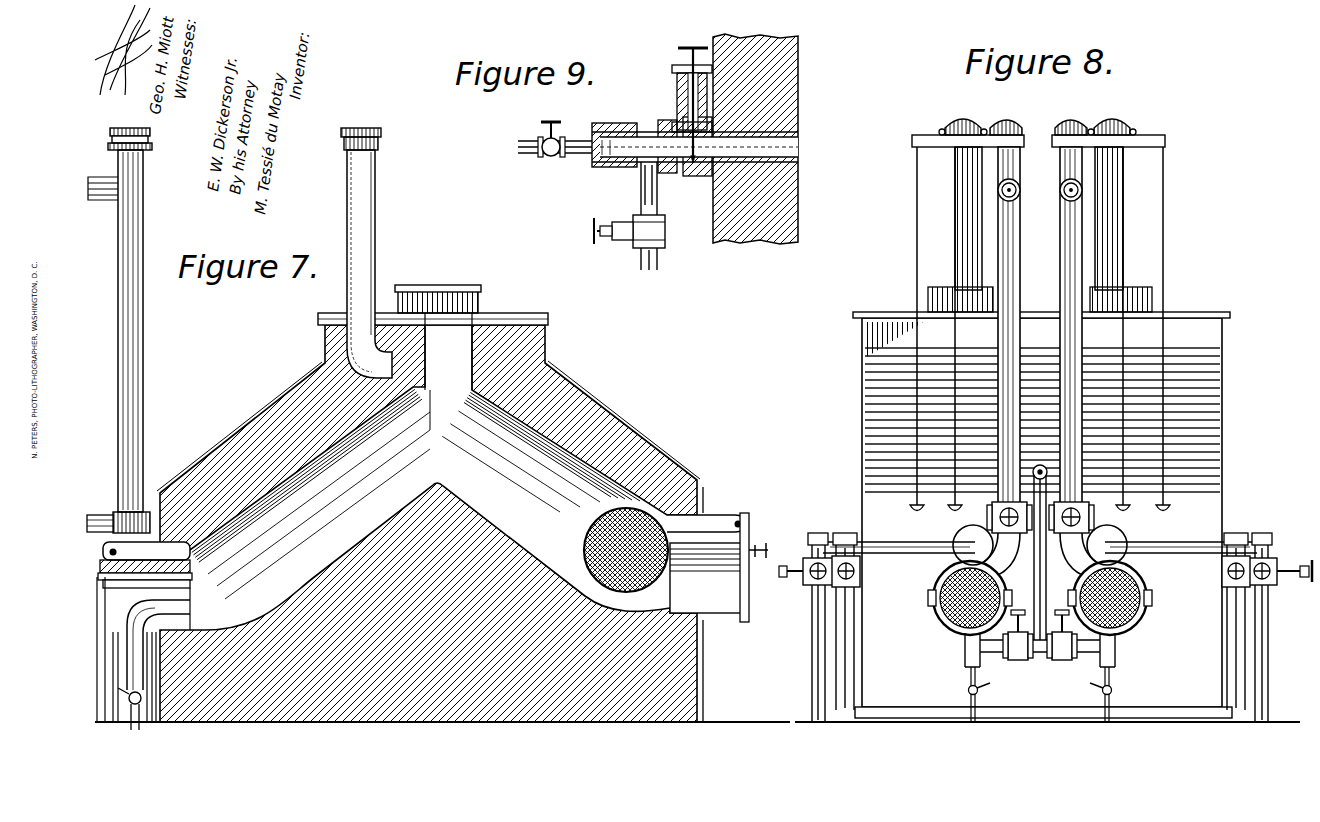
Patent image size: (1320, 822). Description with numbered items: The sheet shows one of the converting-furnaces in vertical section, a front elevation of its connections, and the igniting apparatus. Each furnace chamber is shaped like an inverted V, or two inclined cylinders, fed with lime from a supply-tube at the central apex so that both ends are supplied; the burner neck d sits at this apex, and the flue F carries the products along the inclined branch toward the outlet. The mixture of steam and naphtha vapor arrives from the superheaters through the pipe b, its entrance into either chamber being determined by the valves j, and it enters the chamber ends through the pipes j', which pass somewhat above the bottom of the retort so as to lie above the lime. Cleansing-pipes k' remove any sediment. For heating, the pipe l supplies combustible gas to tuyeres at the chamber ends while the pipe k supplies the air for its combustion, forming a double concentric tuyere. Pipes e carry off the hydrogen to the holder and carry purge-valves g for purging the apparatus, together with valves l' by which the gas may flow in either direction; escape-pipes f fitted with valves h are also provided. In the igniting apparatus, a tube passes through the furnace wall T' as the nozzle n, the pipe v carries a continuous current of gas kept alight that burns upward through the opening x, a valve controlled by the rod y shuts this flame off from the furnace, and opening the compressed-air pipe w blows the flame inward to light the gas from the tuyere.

In FIG. 7, the hydrogen gas pipe e is at (121, 330).
In FIG. 8, the hydrogen gas pipe e is at (1040, 361).
In FIG. 7, the escape-pipe f is at (369, 264).
In FIG. 8, the escape-pipe f is at (1044, 218).
In FIG. 7, the valve h is at (361, 128).
In FIG. 8, the valve h is at (1037, 122).
In FIG. 8, the purge-valve g is at (1038, 121).
In FIG. 7, the burner neck d is at (438, 329).
In FIG. 7, the flue F is at (600, 540).
In FIG. 7, the air pipe k is at (719, 567).
In FIG. 8, the air pipe k is at (1045, 627).
In FIG. 7, the cleansing-pipe k' is at (137, 717).
In FIG. 8, the cleansing-pipe k' is at (1040, 621).
In FIG. 8, the valve j is at (1040, 645).
In FIG. 7, the inlet pipe j' is at (158, 644).
In FIG. 8, the gas pipe l is at (1040, 621).
In FIG. 8, the valve l' is at (1033, 517).
In FIG. 8, the pipe b is at (1034, 552).
In FIG. 9, the compressed-air pipe w is at (553, 138).
In FIG. 9, the opening x is at (621, 140).
In FIG. 9, the rod y is at (692, 95).
In FIG. 9, the nozzle pipe n is at (700, 153).
In FIG. 9, the furnace wall T' is at (769, 139).
In FIG. 9, the gas pipe v is at (633, 216).